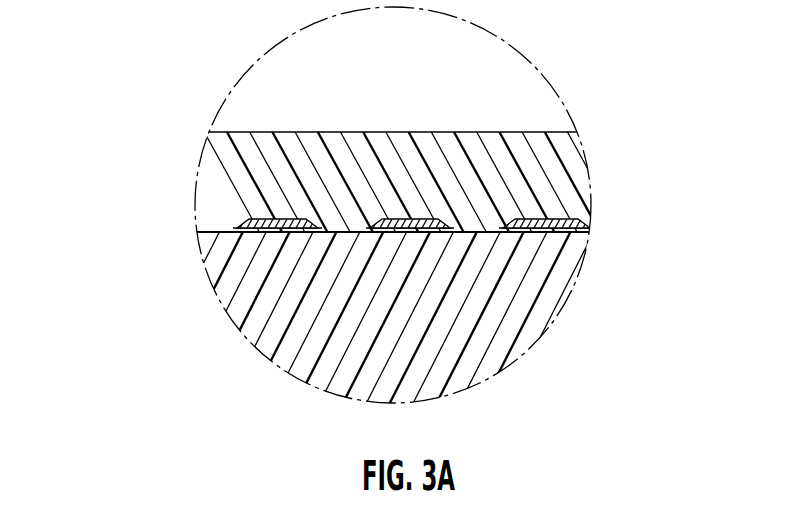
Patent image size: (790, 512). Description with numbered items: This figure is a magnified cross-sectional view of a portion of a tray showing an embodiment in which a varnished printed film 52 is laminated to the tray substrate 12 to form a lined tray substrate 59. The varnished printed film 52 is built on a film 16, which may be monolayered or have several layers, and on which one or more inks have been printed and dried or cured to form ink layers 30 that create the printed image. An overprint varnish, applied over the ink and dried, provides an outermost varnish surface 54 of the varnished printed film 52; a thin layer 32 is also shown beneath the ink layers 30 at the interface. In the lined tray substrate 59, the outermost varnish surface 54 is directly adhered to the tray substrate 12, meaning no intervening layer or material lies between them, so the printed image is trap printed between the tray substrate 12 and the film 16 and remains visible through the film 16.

The lined tray substrate 59 is at (490, 117).
The film 16 is at (585, 183).
The tray substrate 12 is at (557, 310).
The ink layers 30 is at (585, 218).
The thin bonding layer 32 is at (590, 234).
The varnished printed film 52 is at (205, 187).
The outermost varnish surface 54 is at (268, 232).